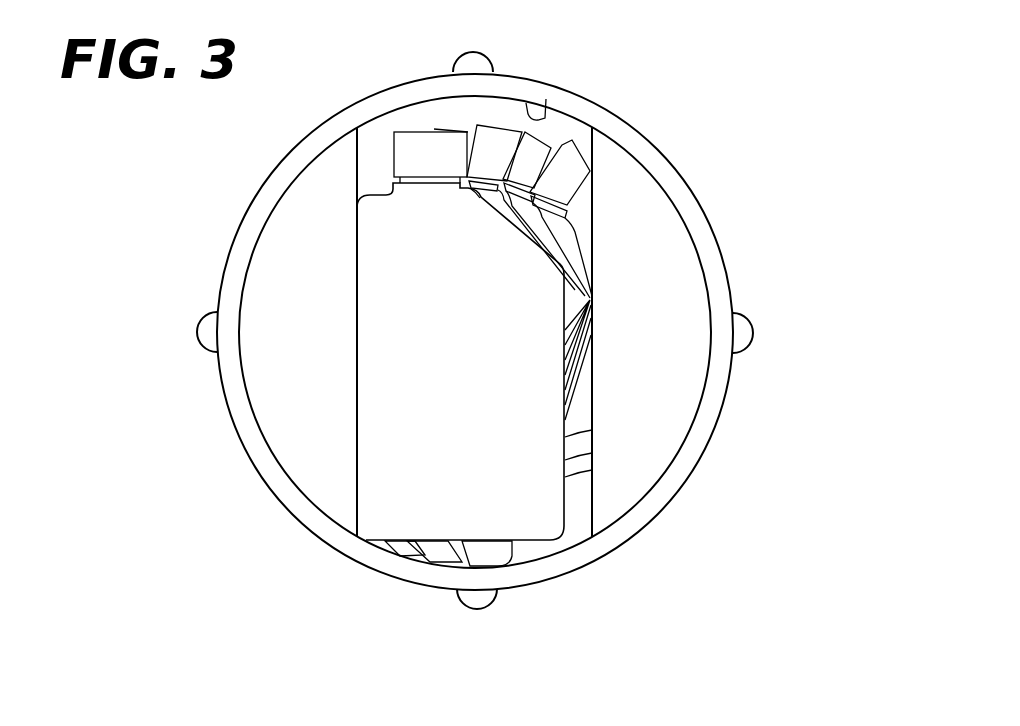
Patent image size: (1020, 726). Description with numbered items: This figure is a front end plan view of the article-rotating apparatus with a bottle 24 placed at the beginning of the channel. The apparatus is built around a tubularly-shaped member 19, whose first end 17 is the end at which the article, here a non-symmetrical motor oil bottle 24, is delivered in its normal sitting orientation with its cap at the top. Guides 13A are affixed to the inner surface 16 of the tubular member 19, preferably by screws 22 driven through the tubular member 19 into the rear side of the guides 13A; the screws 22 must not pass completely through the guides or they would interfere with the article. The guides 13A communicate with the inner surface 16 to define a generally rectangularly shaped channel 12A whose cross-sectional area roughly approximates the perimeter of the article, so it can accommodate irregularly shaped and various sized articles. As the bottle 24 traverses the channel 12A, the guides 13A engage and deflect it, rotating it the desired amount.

The channel 12A is at (580, 522).
The guides 13A is at (672, 318).
The inner surface 16 is at (543, 120).
The first end 17 is at (265, 198).
The tubularly-shaped member 19 is at (656, 150).
The screws 22 is at (465, 58).
The bottle 24 is at (508, 492).